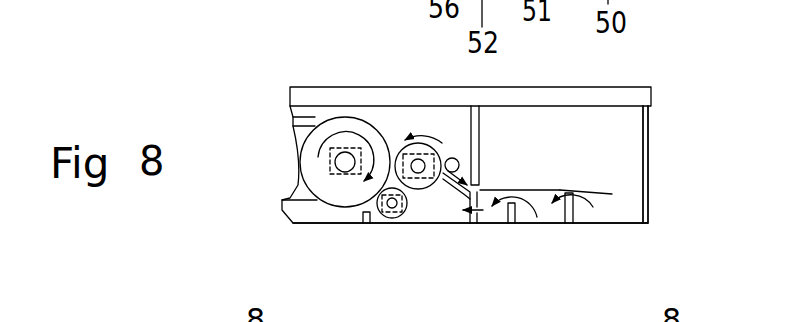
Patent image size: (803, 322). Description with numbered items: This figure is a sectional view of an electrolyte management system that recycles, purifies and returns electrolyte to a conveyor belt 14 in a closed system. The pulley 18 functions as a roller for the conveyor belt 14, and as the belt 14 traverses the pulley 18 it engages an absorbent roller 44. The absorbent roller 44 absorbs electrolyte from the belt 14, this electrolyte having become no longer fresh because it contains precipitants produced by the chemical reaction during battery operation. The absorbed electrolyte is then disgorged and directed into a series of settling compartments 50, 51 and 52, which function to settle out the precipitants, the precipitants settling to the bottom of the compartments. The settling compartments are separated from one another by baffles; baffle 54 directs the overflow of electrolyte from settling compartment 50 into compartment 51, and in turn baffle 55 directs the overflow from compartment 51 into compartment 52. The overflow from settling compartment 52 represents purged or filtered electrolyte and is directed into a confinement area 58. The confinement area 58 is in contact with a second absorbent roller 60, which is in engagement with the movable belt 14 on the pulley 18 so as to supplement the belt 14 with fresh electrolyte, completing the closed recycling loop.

The conveyor belt 14 is at (310, 210).
The pulley 18 is at (348, 125).
The absorbent roller 44 is at (402, 138).
The absorbent roller 60 is at (387, 212).
The confinement area 58 is at (427, 212).
The settling compartment 52 is at (493, 217).
The baffle 55 is at (512, 222).
The settling compartment 51 is at (537, 217).
The baffle 54 is at (568, 222).
The settling compartment 50 is at (628, 203).